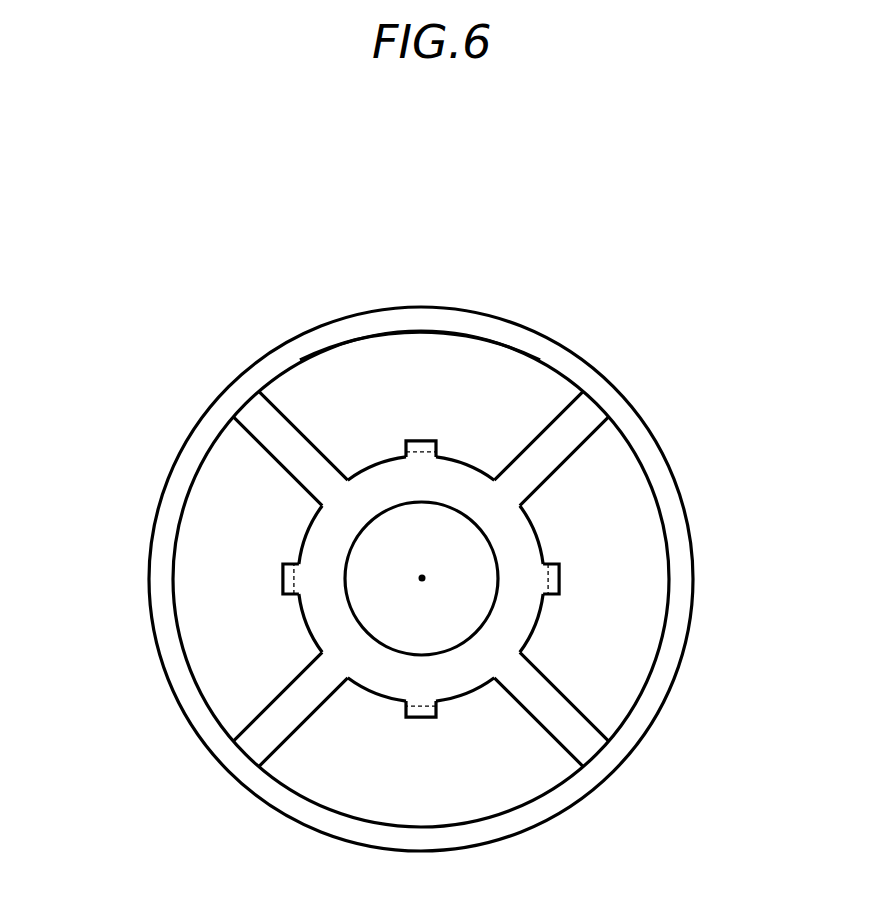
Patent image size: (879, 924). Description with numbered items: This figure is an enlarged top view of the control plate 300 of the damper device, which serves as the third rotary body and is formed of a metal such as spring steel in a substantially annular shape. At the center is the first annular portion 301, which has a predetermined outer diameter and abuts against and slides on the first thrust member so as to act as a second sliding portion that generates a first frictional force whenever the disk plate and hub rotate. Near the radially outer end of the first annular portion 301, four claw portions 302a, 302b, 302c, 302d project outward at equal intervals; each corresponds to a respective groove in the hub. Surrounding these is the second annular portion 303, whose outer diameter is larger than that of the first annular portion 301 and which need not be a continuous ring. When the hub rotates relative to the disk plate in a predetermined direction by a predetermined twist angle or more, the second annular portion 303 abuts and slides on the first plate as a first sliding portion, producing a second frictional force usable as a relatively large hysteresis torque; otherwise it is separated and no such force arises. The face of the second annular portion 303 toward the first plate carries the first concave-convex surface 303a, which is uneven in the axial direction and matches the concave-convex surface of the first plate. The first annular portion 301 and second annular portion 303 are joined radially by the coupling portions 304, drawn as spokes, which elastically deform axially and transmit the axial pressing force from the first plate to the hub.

The control plate 300 is at (527, 322).
The first annular portion 301 is at (518, 545).
The claw portion 302a is at (428, 440).
The claw portion 302b is at (560, 577).
The claw portion 302c is at (425, 717).
The claw portion 302d is at (282, 575).
The second annular portion 303 is at (287, 353).
The first concave-convex surface 303a is at (383, 318).
The coupling portion 304 is at (273, 707).